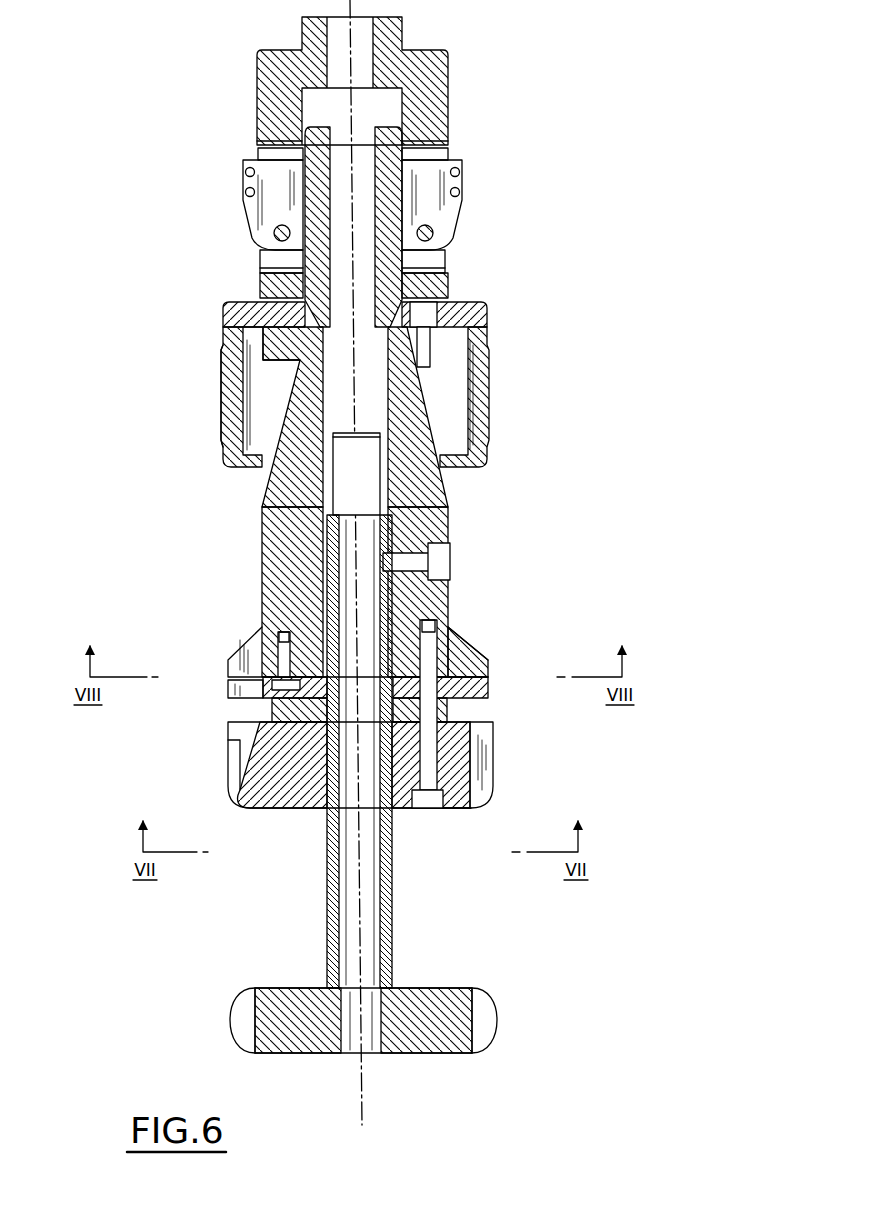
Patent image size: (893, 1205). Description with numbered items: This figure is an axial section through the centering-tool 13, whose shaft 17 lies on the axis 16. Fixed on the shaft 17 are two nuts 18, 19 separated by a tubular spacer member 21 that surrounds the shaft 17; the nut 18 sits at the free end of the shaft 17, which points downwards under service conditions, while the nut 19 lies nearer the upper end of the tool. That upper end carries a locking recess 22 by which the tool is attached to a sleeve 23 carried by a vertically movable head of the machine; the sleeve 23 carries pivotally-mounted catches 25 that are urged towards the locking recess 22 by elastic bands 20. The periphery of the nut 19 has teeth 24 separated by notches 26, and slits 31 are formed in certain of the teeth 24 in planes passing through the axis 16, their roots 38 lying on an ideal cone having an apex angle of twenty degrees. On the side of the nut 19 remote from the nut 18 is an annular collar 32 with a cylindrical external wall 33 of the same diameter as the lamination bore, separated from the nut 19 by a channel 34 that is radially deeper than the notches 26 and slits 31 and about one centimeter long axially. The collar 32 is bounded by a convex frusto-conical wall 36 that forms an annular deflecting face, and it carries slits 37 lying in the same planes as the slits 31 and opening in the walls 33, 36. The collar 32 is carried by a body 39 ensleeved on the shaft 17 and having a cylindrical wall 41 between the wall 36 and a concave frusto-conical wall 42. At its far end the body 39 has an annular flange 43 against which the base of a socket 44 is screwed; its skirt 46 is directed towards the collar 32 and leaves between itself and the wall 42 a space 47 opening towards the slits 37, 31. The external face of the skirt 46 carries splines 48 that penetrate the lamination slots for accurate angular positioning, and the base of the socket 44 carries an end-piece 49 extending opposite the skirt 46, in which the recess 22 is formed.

The centering-tool 13 is at (173, 622).
The axis 16 is at (362, 1100).
The shaft 17 is at (355, 962).
The nut 18 is at (441, 986).
The nut 19 is at (453, 816).
The elastic bands 20 is at (459, 192).
The tubular spacer member 21 is at (327, 884).
The locking recess 22 is at (445, 150).
The sleeve 23 is at (433, 78).
The teeth 24 is at (495, 737).
The pivotally-mounted catches 25 is at (445, 210).
The notches 26 is at (480, 768).
The slits 31 is at (237, 760).
The annular collar 32 is at (489, 637).
The cylindrical external wall 33 is at (488, 670).
The channel 34 is at (473, 712).
The convex frusto-conical wall 36 is at (466, 627).
The slits 37 is at (243, 660).
The roots 38 is at (250, 745).
The body 39 is at (427, 527).
The cylindrical wall 41 is at (253, 590).
The concave frusto-conical wall 42 is at (445, 490).
The annular flange 43 is at (270, 345).
The socket 44 is at (241, 296).
The skirt 46 is at (235, 392).
The space 47 is at (271, 424).
The splines 48 is at (221, 407).
The end-piece 49 is at (440, 265).